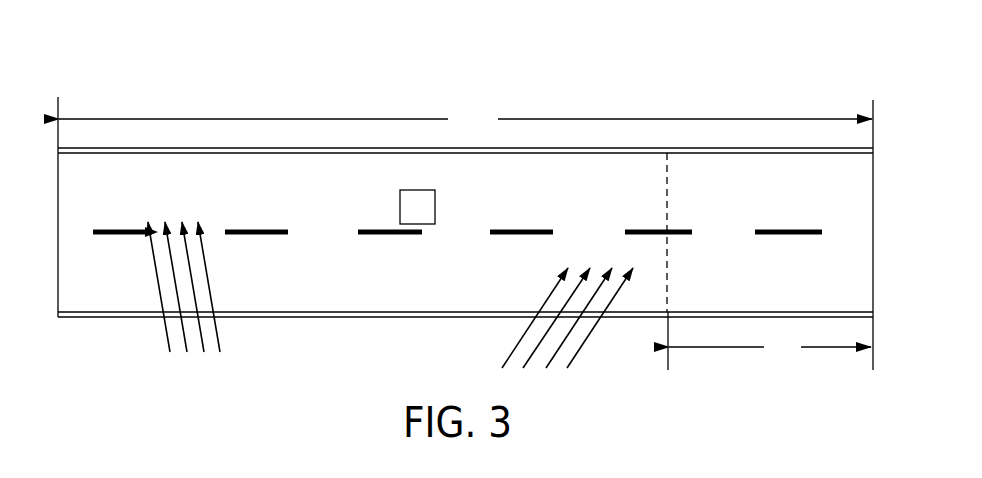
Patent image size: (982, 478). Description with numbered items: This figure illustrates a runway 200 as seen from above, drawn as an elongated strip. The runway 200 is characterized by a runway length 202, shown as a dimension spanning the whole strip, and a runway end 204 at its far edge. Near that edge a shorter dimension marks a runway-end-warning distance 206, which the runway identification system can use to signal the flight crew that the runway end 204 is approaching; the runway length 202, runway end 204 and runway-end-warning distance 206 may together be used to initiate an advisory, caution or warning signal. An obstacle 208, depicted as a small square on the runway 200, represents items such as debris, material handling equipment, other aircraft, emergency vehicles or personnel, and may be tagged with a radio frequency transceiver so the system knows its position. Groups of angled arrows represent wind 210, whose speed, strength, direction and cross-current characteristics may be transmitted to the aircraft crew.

The runway 200 is at (164, 173).
The runway length 202 is at (465, 120).
The runway end 204 is at (872, 101).
The runway-end-warning distance 206 is at (769, 261).
The obstacle 208 is at (432, 200).
The wind 210 is at (163, 322).